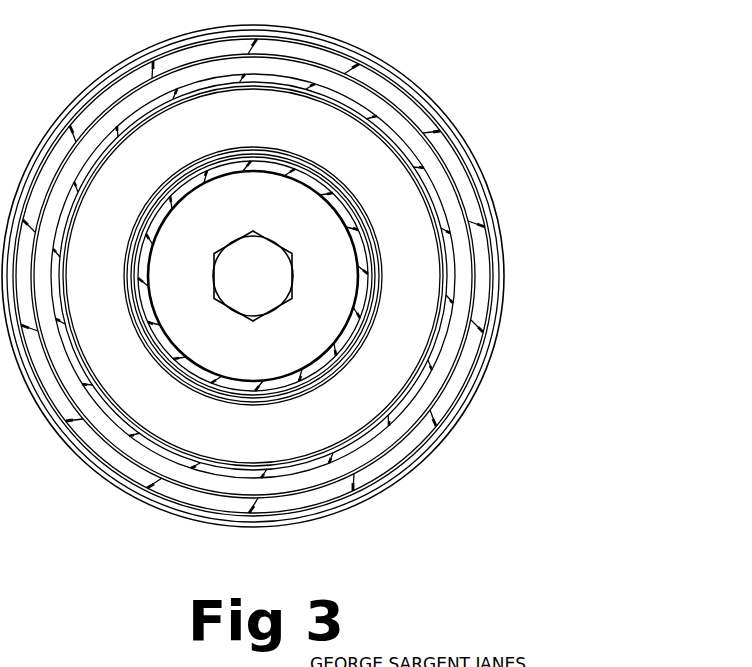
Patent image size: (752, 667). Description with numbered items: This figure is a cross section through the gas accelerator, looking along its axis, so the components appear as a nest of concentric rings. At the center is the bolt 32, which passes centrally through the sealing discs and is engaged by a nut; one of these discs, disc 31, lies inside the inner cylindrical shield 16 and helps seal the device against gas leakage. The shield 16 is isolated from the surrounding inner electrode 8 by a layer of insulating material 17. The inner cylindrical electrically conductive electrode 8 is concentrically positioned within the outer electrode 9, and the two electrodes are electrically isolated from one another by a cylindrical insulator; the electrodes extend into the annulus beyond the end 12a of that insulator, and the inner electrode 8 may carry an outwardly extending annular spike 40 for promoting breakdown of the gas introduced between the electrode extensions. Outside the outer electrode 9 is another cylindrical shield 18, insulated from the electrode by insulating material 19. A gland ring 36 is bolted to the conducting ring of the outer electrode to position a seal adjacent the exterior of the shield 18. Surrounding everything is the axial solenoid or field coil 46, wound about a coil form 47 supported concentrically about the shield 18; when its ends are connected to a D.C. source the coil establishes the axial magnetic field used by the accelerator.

The gland ring 36 is at (352, 47).
The field coil 46 is at (418, 93).
The coil form 47 is at (441, 128).
The cylindrical shield 18 is at (286, 484).
The insulating material 19 is at (355, 448).
The outer electrode 9 is at (437, 334).
The end of the insulator 12a is at (430, 263).
The annular spike 40 is at (266, 147).
The inner cylindrical electrically conductive electrode 8 is at (317, 171).
The insulating material 17 is at (356, 218).
The cylindrical shield 16 is at (331, 204).
The disc 31 is at (200, 333).
The bolt 32 is at (291, 271).